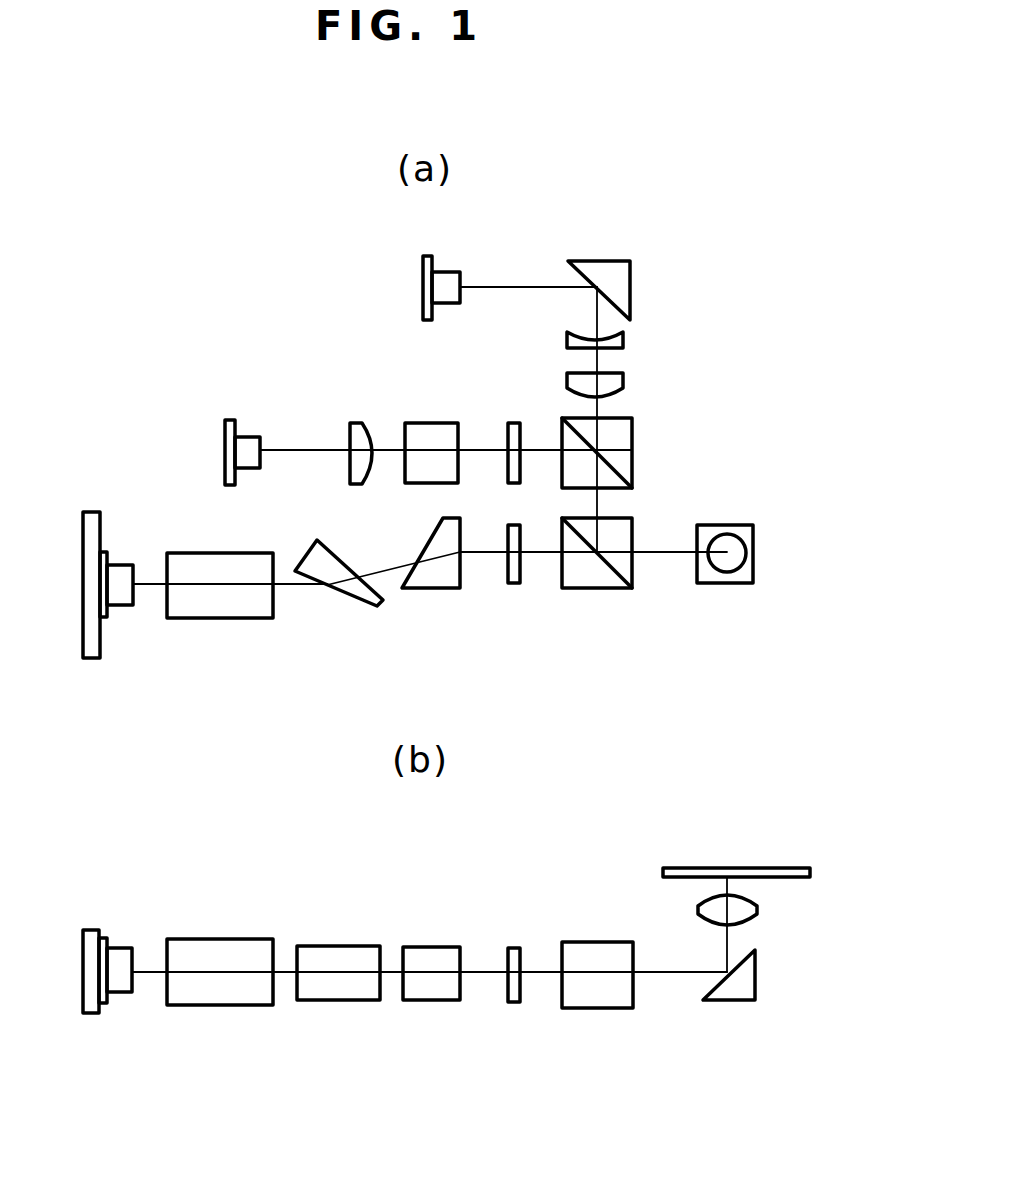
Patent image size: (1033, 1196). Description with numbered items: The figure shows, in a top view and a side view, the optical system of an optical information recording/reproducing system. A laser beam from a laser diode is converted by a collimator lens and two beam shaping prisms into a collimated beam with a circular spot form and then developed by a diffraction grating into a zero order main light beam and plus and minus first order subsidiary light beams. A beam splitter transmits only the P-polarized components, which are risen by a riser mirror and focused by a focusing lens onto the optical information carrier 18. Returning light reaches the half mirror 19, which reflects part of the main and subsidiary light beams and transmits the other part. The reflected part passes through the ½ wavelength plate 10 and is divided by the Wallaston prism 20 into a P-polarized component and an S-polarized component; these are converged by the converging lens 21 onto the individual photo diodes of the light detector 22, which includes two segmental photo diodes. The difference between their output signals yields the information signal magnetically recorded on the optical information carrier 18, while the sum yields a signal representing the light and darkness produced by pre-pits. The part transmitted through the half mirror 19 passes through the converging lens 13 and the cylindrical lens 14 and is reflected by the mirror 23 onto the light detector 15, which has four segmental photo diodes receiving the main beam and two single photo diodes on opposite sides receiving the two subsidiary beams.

The ½ wavelength plate 10 is at (514, 423).
The converging lens 13 is at (623, 385).
The cylindrical lens 14 is at (623, 340).
The light detector 15 is at (423, 268).
The optical information carrier 18 is at (778, 868).
The half mirror 19 is at (632, 452).
The Wallaston prism 20 is at (437, 423).
The converging lens 21 is at (352, 423).
The light detector 22 is at (230, 420).
The mirror 23 is at (630, 275).